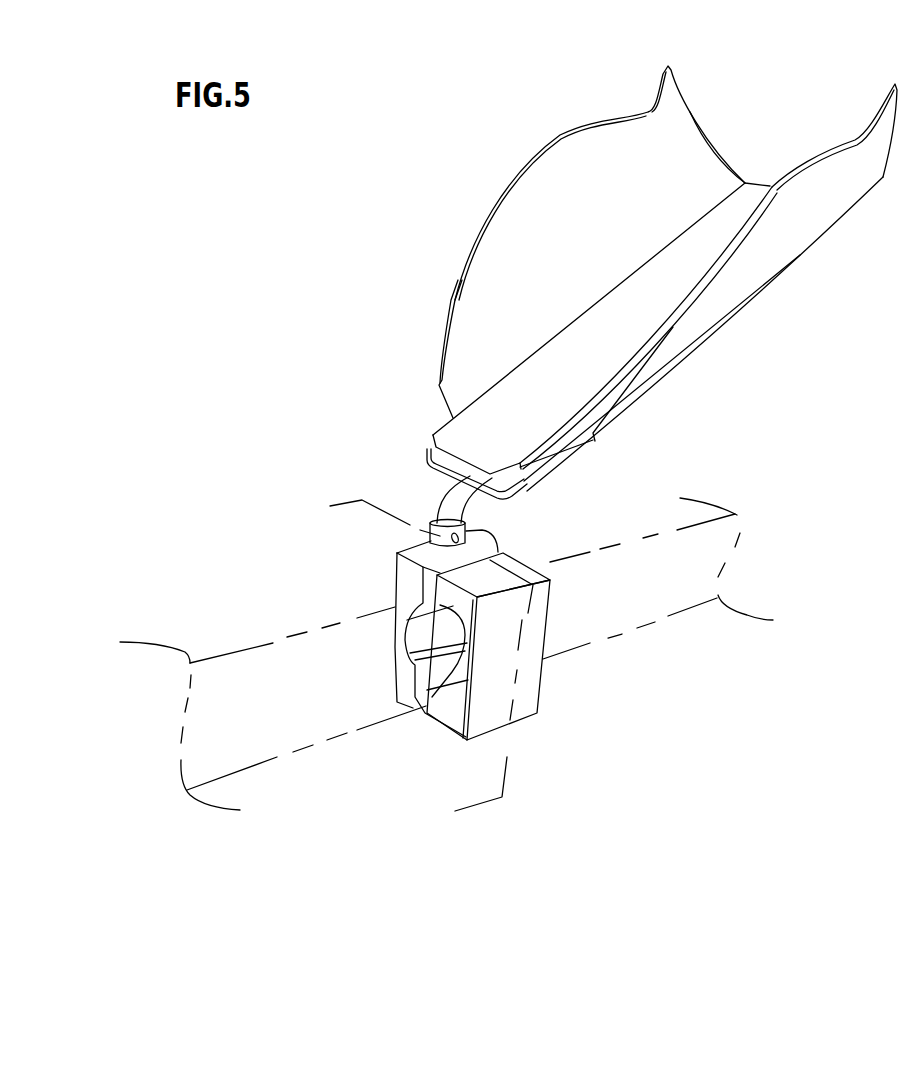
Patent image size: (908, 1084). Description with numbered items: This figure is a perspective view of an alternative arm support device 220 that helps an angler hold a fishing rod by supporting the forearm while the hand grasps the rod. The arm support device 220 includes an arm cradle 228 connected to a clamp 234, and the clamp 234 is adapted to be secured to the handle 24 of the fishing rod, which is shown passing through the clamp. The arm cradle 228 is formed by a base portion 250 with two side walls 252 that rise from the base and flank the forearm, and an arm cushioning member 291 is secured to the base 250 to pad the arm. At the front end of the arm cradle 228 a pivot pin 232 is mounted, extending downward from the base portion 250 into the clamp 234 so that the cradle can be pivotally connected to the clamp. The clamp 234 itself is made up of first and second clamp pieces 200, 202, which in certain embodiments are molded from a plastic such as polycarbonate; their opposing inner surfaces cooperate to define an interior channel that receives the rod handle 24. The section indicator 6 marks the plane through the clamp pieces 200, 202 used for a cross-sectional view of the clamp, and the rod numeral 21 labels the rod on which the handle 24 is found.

The arm support device 220 is at (470, 180).
The side walls 252 is at (570, 157).
The arm cradle 228 is at (708, 145).
The arm cushioning member 291 is at (437, 425).
The base portion 250 is at (433, 443).
The pivot pin 232 is at (448, 500).
The clamp 234 is at (510, 557).
The second clamp piece 202 is at (393, 568).
The first clamp piece 200 is at (547, 617).
The pole 21 is at (207, 657).
The handle 24 is at (247, 647).
The section line 6- 6 is at (318, 508).